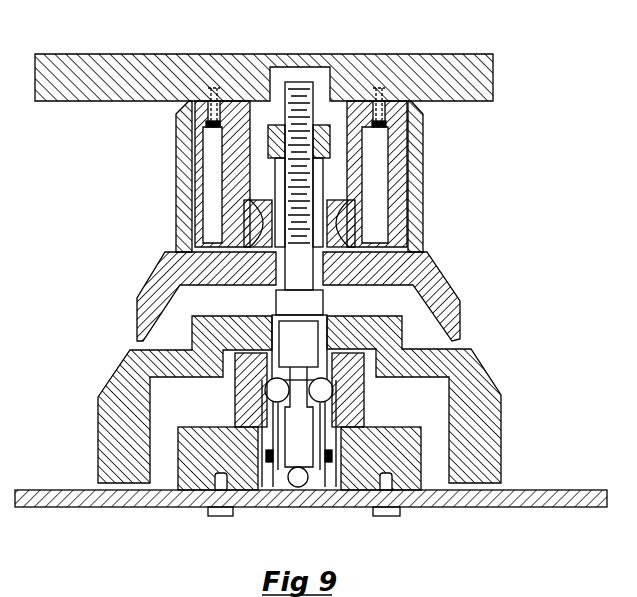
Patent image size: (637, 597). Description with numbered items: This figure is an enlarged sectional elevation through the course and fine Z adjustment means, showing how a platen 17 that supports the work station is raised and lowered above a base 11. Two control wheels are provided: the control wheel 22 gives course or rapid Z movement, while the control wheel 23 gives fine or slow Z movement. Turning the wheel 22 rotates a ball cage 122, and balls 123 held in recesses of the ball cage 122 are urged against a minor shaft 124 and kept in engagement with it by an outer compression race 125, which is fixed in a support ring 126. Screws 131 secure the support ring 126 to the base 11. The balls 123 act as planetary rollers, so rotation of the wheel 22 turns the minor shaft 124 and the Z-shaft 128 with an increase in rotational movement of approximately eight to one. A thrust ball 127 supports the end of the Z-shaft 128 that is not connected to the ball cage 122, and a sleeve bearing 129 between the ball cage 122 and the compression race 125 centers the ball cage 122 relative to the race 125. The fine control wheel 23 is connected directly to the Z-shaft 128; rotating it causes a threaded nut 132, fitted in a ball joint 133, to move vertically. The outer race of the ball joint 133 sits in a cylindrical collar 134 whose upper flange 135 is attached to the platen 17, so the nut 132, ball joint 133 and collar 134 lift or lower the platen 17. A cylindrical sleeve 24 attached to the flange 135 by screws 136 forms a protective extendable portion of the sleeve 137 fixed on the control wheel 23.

The base 11 is at (50, 492).
The platen 17 is at (174, 88).
The control wheel 22 is at (498, 439).
The control wheel 23 is at (452, 298).
The cylindrical sleeve 24 is at (195, 158).
The ball cage 122 is at (312, 303).
The balls 123 is at (360, 375).
The minor shaft 124 is at (308, 352).
The outer compression race 125 is at (355, 410).
The support ring 126 is at (410, 485).
The thrust ball 127 is at (306, 488).
The Z-shaft 128 is at (302, 103).
The sleeve bearing 129 is at (268, 463).
The screws 131 is at (208, 512).
The threaded nut 132 is at (266, 226).
The ball joint 133 is at (340, 220).
The cylindrical collar 134 is at (358, 152).
The upper flange 135 is at (364, 100).
The screws 136 is at (207, 123).
The sleeve 137 is at (177, 179).